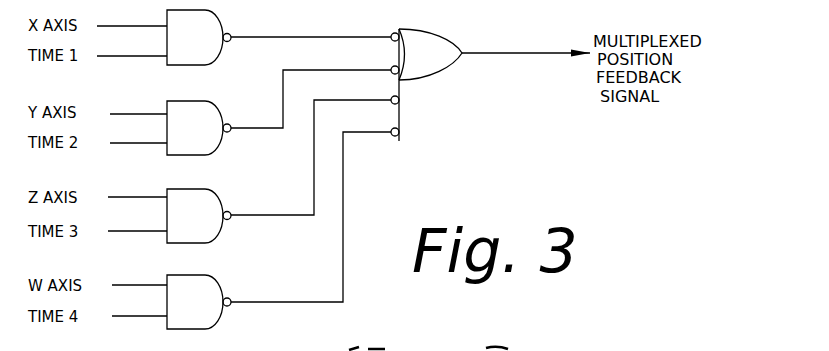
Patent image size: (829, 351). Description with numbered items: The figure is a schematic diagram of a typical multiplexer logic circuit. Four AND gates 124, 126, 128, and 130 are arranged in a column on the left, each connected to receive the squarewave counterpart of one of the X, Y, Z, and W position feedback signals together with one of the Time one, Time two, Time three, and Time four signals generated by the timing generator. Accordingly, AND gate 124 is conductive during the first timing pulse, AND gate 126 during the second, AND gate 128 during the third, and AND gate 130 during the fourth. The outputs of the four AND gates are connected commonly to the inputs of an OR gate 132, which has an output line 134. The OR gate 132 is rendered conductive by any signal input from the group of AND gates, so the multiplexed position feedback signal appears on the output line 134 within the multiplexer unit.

The AND gate 124 is at (203, 50).
The AND gate 126 is at (208, 135).
The AND gate 128 is at (208, 225).
The AND gate 130 is at (212, 292).
The OR gate 132 is at (432, 73).
The output line 134 is at (515, 53).